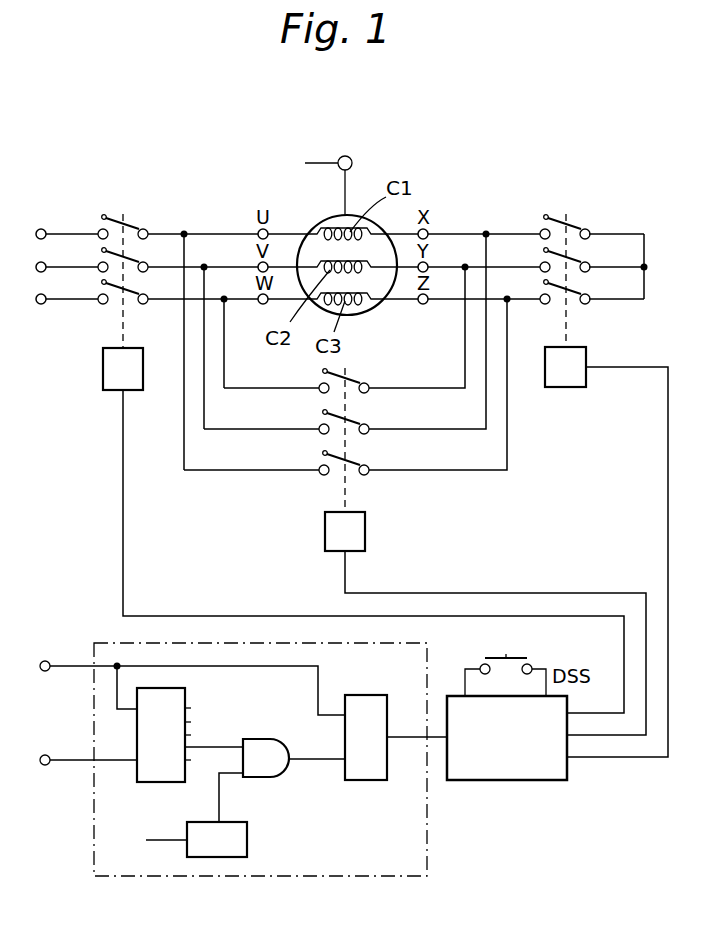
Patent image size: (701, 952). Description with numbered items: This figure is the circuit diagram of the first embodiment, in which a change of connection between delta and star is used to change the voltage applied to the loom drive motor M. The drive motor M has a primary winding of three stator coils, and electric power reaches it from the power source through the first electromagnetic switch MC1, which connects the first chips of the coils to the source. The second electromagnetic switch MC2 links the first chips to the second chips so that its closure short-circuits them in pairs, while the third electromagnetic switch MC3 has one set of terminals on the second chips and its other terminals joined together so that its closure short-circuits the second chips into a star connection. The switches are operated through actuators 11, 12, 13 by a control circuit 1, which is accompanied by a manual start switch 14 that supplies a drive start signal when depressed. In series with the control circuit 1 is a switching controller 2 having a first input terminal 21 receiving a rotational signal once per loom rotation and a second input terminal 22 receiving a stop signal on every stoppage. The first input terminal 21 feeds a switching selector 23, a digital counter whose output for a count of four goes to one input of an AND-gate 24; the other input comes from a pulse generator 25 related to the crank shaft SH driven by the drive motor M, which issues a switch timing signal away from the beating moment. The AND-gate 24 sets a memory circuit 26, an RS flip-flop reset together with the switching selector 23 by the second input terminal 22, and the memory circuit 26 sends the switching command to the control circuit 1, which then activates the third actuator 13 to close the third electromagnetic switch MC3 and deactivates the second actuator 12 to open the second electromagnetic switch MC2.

The control circuit 1 is at (514, 781).
The switching controller 2 is at (292, 876).
The first actuator 11 is at (103, 378).
The second actuator 12 is at (366, 540).
The third actuator 13 is at (573, 388).
The manual start switch 14 is at (518, 655).
The first input terminal 21 is at (44, 766).
The second input terminal 22 is at (40, 644).
The switching selector 23 is at (167, 782).
The AND-gate 24 is at (262, 739).
The pulse generator 25 is at (247, 846).
The memory circuit 26 is at (370, 780).
The first electromagnetic switch MC1 is at (132, 253).
The second electromagnetic switch MC2 is at (359, 476).
The third electromagnetic switch MC3 is at (584, 259).
The drive motor M is at (390, 305).
The crank shaft SH is at (351, 160).